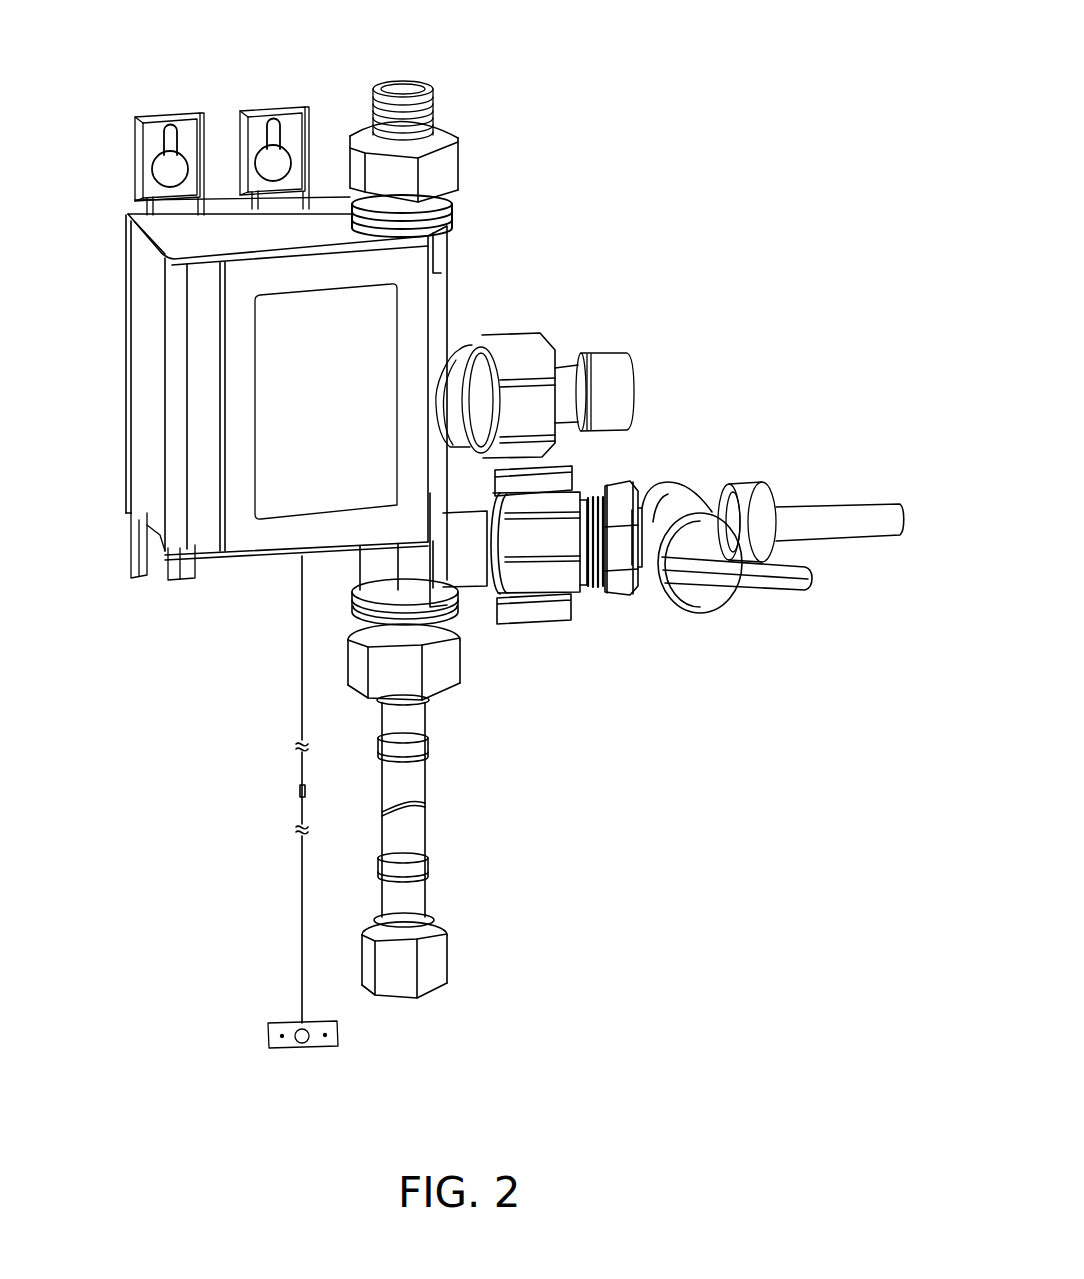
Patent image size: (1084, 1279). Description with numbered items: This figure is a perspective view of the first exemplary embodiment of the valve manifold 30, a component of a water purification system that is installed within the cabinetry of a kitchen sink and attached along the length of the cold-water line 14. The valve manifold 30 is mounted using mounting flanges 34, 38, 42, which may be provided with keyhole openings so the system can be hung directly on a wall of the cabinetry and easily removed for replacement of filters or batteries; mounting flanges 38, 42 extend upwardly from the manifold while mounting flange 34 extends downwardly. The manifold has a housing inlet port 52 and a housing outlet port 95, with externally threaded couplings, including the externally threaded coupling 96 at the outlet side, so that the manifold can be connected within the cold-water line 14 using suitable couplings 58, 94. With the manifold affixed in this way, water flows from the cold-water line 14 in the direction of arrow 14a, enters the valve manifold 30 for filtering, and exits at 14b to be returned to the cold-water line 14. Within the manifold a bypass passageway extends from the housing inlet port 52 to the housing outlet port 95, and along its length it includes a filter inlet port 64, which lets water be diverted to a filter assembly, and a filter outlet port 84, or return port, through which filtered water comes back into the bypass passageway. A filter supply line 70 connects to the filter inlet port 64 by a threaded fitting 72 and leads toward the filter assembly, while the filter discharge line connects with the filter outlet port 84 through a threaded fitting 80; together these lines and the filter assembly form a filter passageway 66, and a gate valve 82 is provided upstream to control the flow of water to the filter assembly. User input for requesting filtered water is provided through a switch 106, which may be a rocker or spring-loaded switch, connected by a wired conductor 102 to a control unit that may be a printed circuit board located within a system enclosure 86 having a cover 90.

The cold-water line 14 is at (415, 833).
The arrow 14a is at (402, 1046).
The exit point 14b is at (405, 28).
The valve manifold 30 is at (86, 252).
The mounting flange 34 is at (140, 572).
The mounting flange 38 is at (135, 151).
The mounting flange 42 is at (284, 120).
The housing inlet port 52 is at (358, 614).
The coupling 58 is at (437, 680).
The filter inlet port 64 is at (501, 604).
The filter passageway 66 is at (634, 389).
The filter supply line 70 is at (827, 520).
The threaded fitting 72 is at (557, 612).
The threaded fitting 80 is at (508, 348).
The gate valve 82 is at (695, 537).
The filter outlet port 84 is at (455, 368).
The system enclosure 86 is at (148, 345).
The cover 90 is at (288, 418).
The coupling 94 is at (363, 133).
The housing outlet port 95 is at (452, 203).
The externally threaded coupling 96 is at (353, 194).
The wired conductor 102 is at (300, 932).
The switch 106 is at (304, 1050).